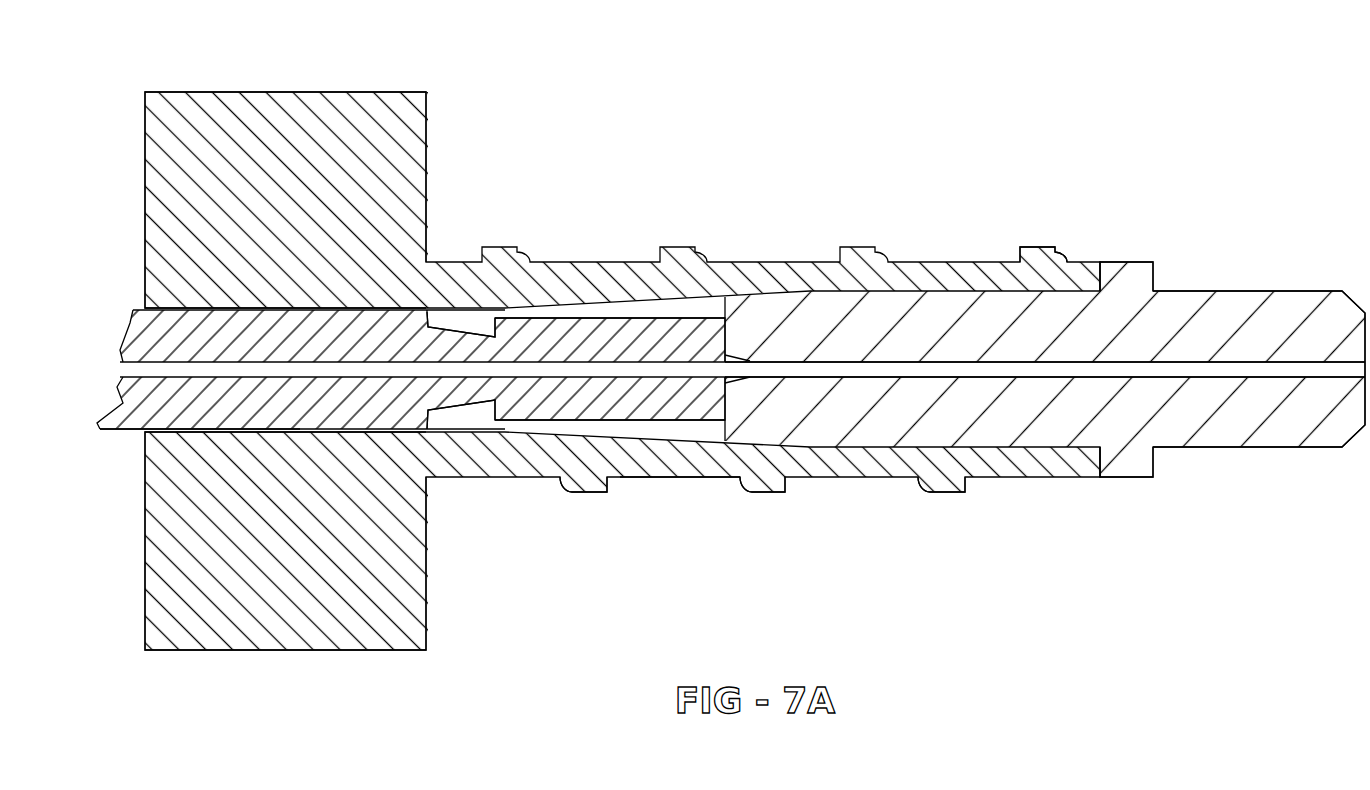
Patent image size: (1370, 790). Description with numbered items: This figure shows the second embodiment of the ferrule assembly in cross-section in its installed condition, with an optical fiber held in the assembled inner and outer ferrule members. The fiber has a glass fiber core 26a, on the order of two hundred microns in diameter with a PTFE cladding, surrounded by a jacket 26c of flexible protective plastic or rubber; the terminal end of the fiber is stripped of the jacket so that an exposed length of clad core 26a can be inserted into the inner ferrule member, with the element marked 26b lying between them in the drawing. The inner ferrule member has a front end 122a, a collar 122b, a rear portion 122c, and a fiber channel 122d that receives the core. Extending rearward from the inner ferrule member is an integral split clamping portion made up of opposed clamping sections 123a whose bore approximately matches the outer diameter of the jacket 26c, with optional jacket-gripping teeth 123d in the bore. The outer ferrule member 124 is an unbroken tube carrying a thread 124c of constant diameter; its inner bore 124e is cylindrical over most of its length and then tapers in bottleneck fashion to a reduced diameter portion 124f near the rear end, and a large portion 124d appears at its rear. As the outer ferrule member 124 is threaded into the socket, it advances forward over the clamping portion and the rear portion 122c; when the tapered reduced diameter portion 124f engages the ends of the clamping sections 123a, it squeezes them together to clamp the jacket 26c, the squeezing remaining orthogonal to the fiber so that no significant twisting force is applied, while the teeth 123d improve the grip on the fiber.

The glass fiber core 26a is at (117, 367).
The cable dielectric 26b is at (128, 400).
The jacket 26c is at (135, 312).
The front end 122a is at (1237, 307).
The collar 122b is at (1137, 270).
The rear portion 122c is at (935, 308).
The fiber channel 122d is at (1027, 377).
The clamping sections 123a is at (677, 307).
The jacket-gripping teeth 123d is at (465, 322).
The outer ferrule member 124 is at (797, 262).
The thread 124c is at (775, 493).
The housing flange block 124d is at (372, 92).
The inner bore 124e is at (1005, 290).
The reduced diameter portion 124f is at (691, 445).